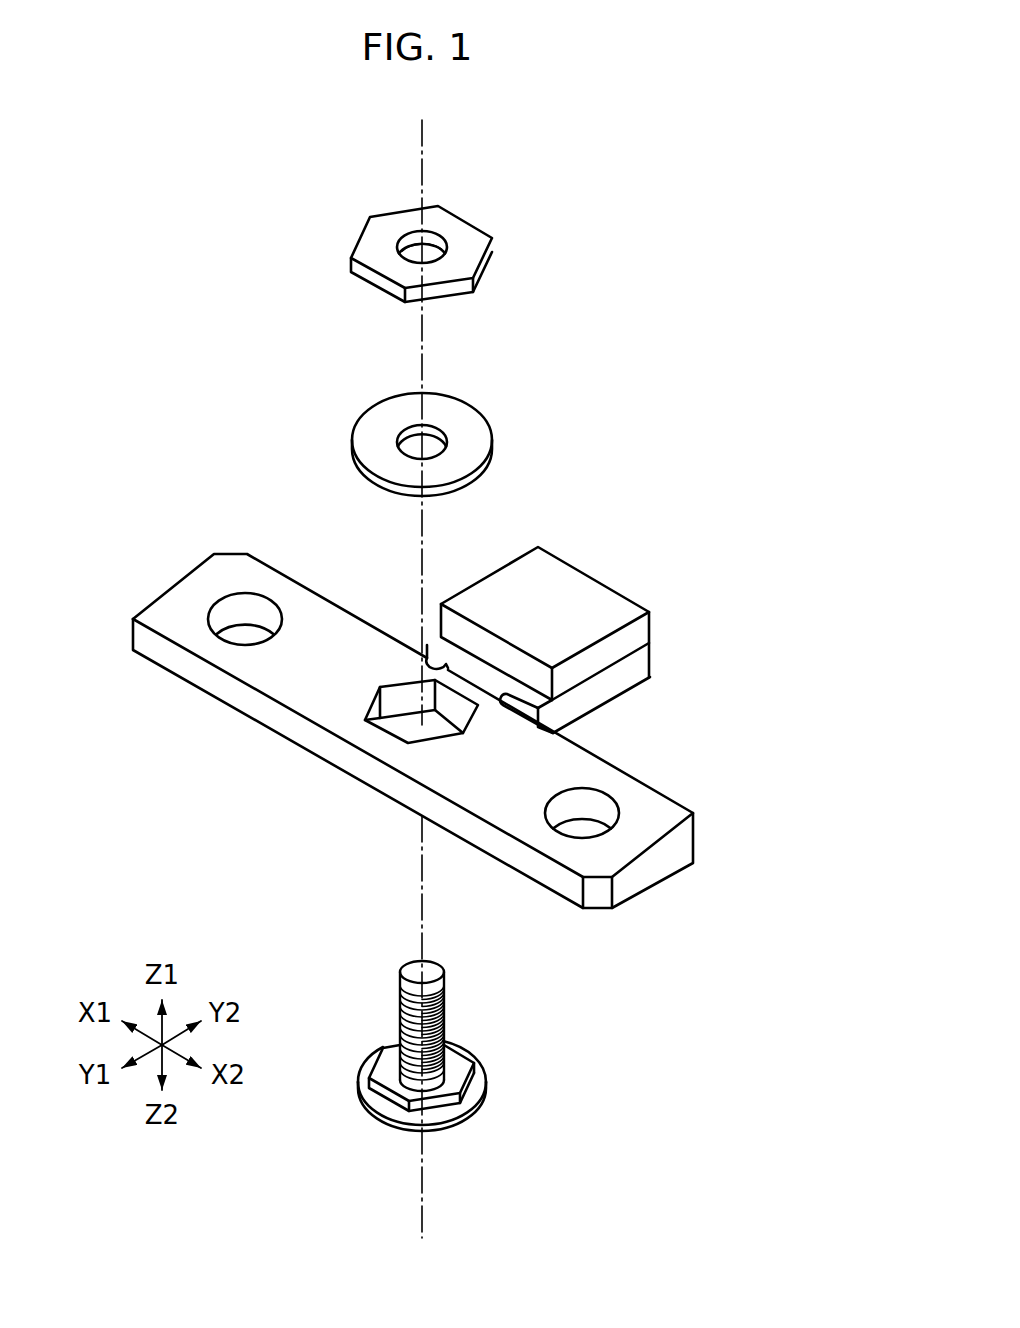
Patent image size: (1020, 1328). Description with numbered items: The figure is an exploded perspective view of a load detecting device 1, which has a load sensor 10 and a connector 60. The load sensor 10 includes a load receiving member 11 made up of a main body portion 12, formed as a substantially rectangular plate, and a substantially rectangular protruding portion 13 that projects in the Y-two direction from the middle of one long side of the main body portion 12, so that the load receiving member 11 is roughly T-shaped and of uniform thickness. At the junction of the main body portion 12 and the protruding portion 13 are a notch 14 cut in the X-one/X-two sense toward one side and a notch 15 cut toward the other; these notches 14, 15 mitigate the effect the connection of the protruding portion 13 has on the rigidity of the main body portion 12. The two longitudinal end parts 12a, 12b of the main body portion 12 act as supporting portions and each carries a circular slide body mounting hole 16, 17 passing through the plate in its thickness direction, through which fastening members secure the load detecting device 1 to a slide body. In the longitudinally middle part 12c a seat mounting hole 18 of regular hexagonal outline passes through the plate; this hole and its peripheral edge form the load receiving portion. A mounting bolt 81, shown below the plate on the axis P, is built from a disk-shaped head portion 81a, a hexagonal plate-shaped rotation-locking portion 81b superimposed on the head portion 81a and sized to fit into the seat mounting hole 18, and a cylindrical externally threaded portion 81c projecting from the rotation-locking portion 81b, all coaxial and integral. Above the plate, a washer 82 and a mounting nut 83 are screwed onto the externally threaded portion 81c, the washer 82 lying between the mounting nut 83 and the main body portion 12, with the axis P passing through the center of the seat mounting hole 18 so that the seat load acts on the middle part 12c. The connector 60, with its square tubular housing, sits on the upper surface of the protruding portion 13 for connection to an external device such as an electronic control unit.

The load detecting device 1 is at (634, 576).
The load sensor 10 is at (264, 564).
The load receiving member 11 is at (726, 678).
The main body portion 12 is at (583, 768).
The longitudinal end part 12a is at (193, 638).
The longitudinal end part 12b is at (575, 857).
The longitudinally middle part 12c is at (385, 750).
The protruding portion 13 is at (533, 693).
The notch 14 is at (437, 657).
The notch 15 is at (515, 703).
The slide body mounting hole 16 is at (272, 618).
The slide body mounting hole 17 is at (607, 800).
The seat mounting hole 18 is at (460, 708).
The connector 60 is at (642, 630).
The mounting bolt 81 is at (452, 993).
The head portion 81a is at (478, 1106).
The rotation-locking portion 81b is at (477, 1065).
The externally threaded portion 81c is at (444, 1032).
The washer 82 is at (473, 433).
The mounting nut 83 is at (472, 237).
The axis P is at (422, 1205).